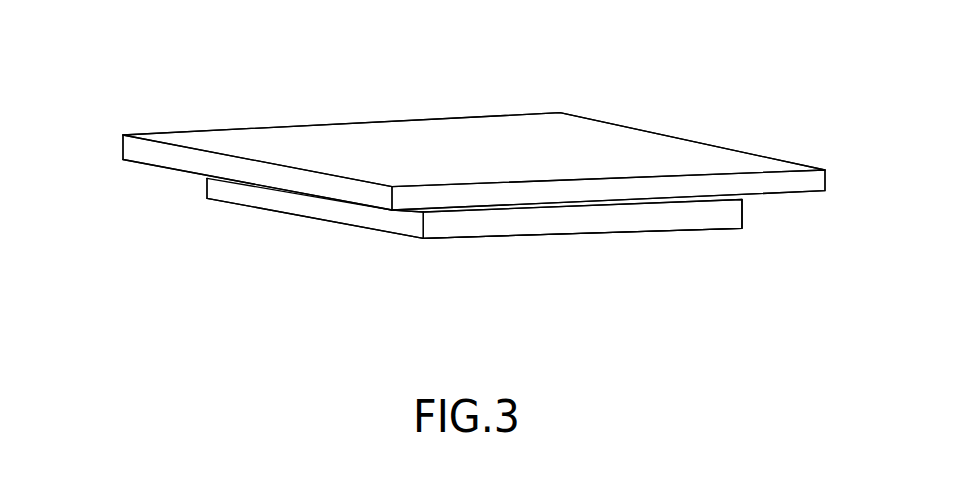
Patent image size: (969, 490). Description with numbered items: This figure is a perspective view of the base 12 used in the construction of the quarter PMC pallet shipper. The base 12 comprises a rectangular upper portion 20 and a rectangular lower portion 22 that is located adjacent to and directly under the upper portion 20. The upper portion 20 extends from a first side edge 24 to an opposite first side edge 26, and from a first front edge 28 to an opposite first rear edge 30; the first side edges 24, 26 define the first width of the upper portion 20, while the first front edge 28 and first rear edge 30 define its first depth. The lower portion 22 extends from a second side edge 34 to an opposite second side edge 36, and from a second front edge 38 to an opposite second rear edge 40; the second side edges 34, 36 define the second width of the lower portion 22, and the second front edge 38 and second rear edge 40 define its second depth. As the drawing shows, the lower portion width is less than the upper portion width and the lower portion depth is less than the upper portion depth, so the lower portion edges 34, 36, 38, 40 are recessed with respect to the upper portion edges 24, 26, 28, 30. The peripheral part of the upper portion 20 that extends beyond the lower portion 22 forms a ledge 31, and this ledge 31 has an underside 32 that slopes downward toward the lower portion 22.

The base 12 is at (745, 43).
The upper portion 20 is at (825, 180).
The lower portion 22 is at (742, 209).
The first side edge 24 is at (193, 158).
The first side edge 26 is at (825, 168).
The first front edge 28 is at (633, 188).
The first rear edge 30 is at (122, 147).
The ledge 31 is at (140, 165).
The underside 32 is at (408, 213).
The second side edge 34 is at (317, 207).
The second side edge 36 is at (742, 219).
The second front edge 38 is at (557, 220).
The second rear edge 40 is at (207, 192).